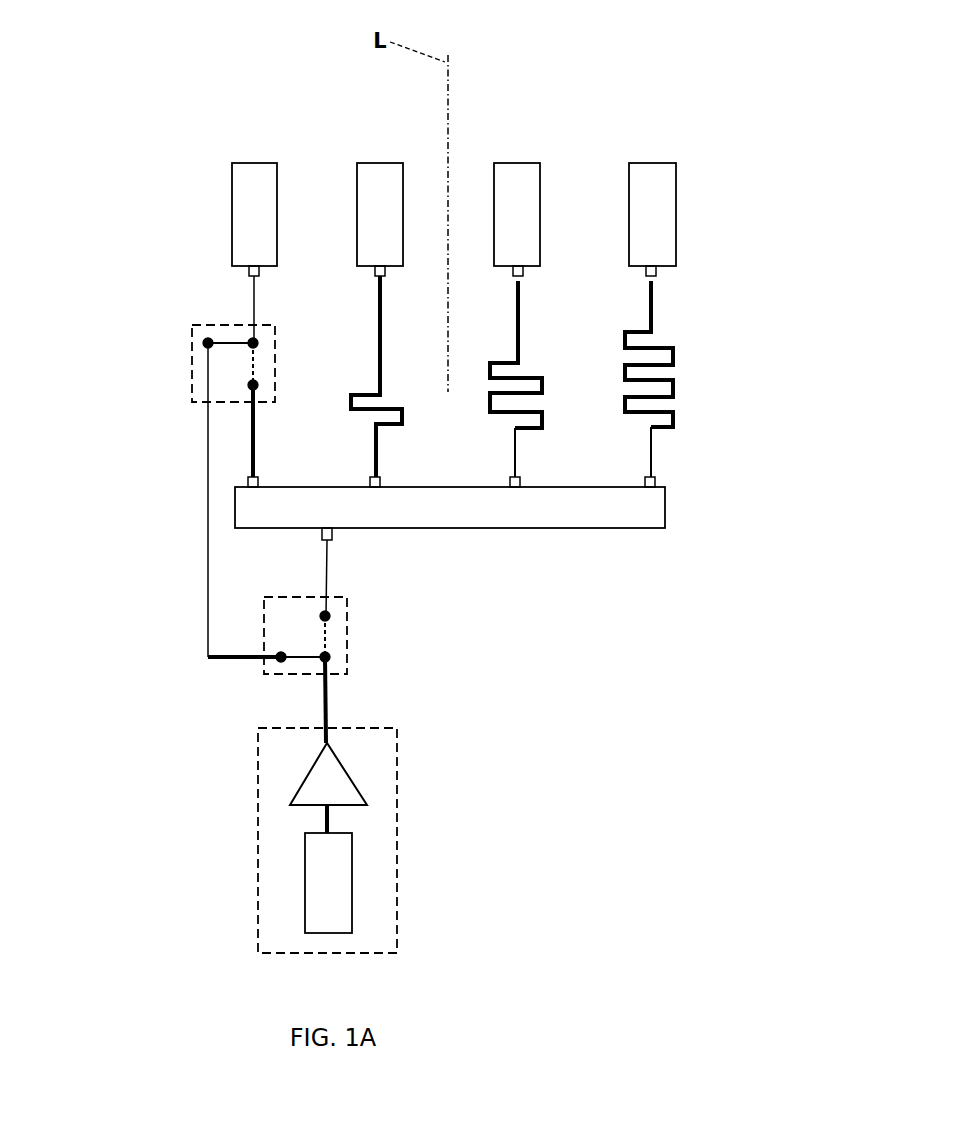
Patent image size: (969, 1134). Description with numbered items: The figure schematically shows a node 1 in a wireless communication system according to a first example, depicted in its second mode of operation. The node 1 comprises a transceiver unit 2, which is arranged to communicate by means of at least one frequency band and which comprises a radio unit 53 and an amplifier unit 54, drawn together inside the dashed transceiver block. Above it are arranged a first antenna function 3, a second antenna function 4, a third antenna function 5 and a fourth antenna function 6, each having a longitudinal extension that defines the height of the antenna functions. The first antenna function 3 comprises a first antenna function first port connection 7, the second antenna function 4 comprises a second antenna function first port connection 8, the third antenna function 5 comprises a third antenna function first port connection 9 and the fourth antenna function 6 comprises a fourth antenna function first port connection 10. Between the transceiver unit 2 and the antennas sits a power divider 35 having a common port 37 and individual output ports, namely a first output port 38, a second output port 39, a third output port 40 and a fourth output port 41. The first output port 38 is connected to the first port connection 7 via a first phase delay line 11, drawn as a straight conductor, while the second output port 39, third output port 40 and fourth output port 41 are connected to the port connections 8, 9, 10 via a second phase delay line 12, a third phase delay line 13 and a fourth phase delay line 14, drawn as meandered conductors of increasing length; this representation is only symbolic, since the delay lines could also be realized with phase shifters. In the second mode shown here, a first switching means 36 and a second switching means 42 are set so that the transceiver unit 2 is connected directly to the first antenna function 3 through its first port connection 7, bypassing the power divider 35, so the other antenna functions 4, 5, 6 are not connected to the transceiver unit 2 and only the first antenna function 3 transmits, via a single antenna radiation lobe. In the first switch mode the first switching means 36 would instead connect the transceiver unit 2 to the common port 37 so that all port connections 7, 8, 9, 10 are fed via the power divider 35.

The node 1 is at (175, 98).
The transceiver unit 2 is at (371, 728).
The first antenna function 3 is at (247, 223).
The second antenna function 4 is at (387, 214).
The third antenna function 5 is at (524, 214).
The fourth antenna function 6 is at (660, 214).
The first antenna function first port connection 7 is at (248, 270).
The second antenna function first port connection 8 is at (373, 273).
The third antenna function first port connection 9 is at (511, 273).
The fourth antenna function first port connection 10 is at (644, 273).
The first phase delay line 11 is at (240, 440).
The second phase delay line 12 is at (338, 422).
The third phase delay line 13 is at (555, 402).
The fourth phase delay line 14 is at (692, 379).
The power divider 35 is at (420, 530).
The first switching means 36 is at (350, 635).
The common port 37 is at (320, 536).
The first output port 38 is at (243, 487).
The second output port 39 is at (370, 488).
The third output port 40 is at (515, 489).
The fourth output port 41 is at (652, 490).
The second switching means 42 is at (190, 360).
The radio unit 53 is at (333, 882).
The amplifier unit 54 is at (340, 778).